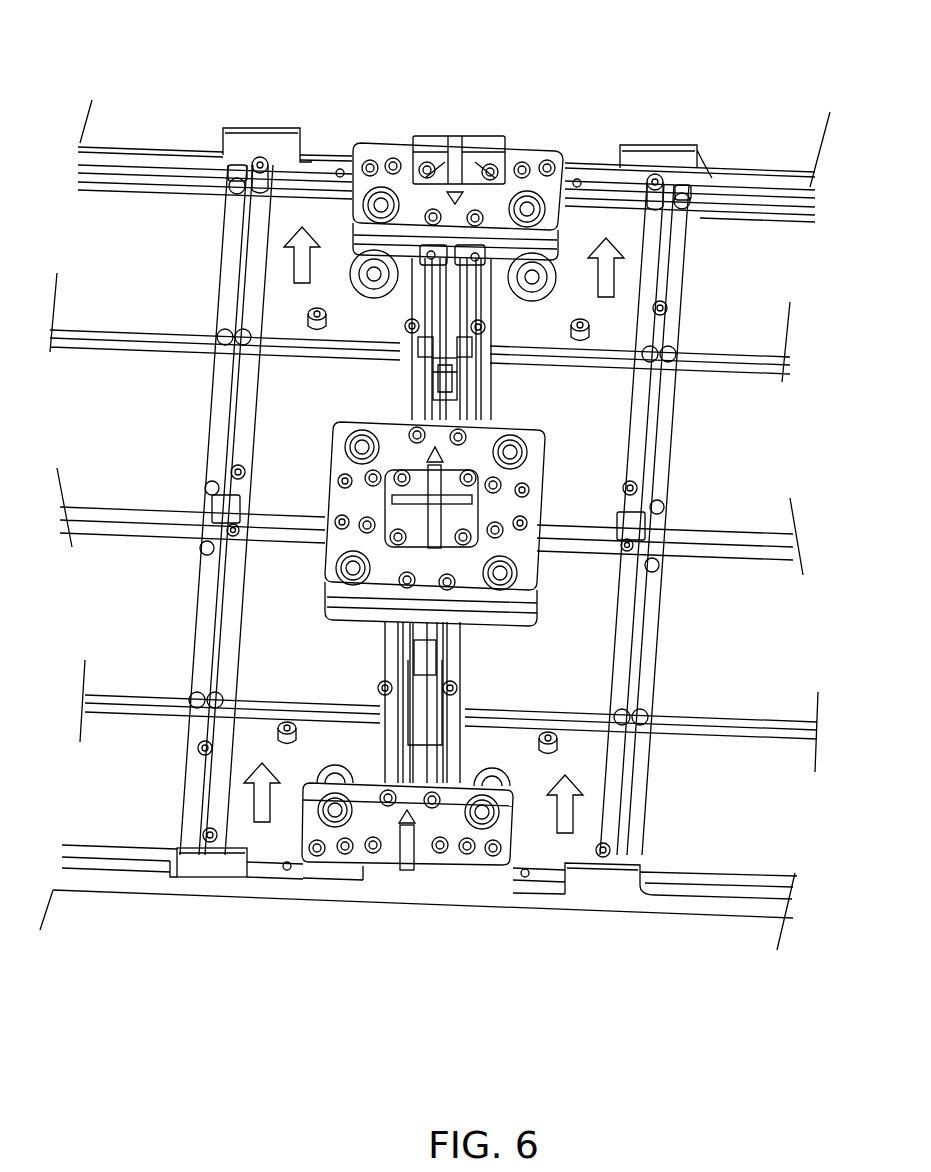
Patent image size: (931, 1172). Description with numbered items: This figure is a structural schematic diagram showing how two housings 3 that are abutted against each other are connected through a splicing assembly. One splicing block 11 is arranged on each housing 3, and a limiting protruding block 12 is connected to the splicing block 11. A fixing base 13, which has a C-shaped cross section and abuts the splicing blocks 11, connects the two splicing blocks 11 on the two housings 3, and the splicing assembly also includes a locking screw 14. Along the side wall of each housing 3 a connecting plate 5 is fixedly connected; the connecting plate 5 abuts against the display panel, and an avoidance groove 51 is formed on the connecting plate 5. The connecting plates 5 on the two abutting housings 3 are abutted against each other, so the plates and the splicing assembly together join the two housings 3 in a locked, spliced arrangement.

The housing 3 is at (138, 767).
The connecting plate 5 is at (283, 155).
The avoidance groove 51 is at (139, 132).
The splicing block 11 is at (500, 620).
The limiting protruding block 12 is at (427, 477).
The fixing base 13 is at (522, 470).
The locking screw 14 is at (517, 577).